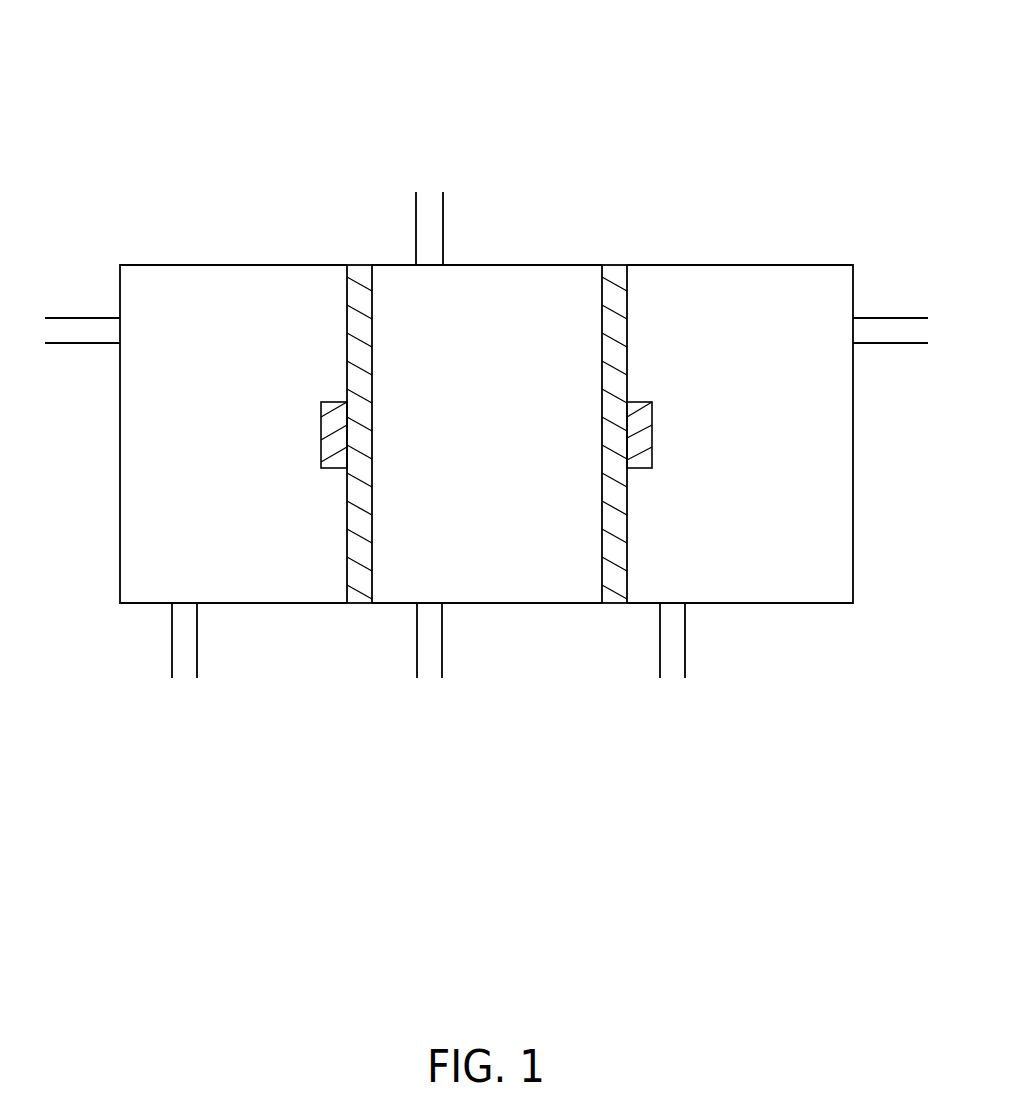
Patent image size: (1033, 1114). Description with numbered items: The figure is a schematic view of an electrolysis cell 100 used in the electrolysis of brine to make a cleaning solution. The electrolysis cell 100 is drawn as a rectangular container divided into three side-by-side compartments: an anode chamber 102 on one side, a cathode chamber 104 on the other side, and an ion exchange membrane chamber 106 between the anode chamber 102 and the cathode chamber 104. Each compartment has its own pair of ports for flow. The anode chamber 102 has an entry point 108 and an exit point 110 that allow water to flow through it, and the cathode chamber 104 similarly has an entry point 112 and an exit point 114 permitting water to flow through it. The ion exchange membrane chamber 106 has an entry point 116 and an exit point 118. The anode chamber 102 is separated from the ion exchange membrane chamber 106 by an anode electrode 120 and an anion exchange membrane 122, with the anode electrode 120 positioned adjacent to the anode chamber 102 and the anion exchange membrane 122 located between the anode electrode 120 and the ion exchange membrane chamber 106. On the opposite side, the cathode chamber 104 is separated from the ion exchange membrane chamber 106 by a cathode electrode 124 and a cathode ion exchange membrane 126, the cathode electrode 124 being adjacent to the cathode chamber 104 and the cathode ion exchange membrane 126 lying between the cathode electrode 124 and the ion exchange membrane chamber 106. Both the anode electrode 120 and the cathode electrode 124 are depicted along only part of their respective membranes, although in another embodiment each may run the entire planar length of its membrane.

The electrolysis cell 100 is at (190, 103).
The anode chamber 102 is at (266, 561).
The cathode chamber 104 is at (756, 575).
The ion exchange membrane chamber 106 is at (546, 575).
The entry point 108 is at (82, 318).
The exit point 110 is at (197, 622).
The entry point 112 is at (888, 318).
The exit point 114 is at (685, 624).
The entry point 116 is at (417, 620).
The exit point 118 is at (416, 203).
The anode electrode 120 is at (321, 425).
The anion exchange membrane 122 is at (360, 264).
The cathode electrode 124 is at (652, 418).
The cathode ion exchange membrane 126 is at (618, 264).